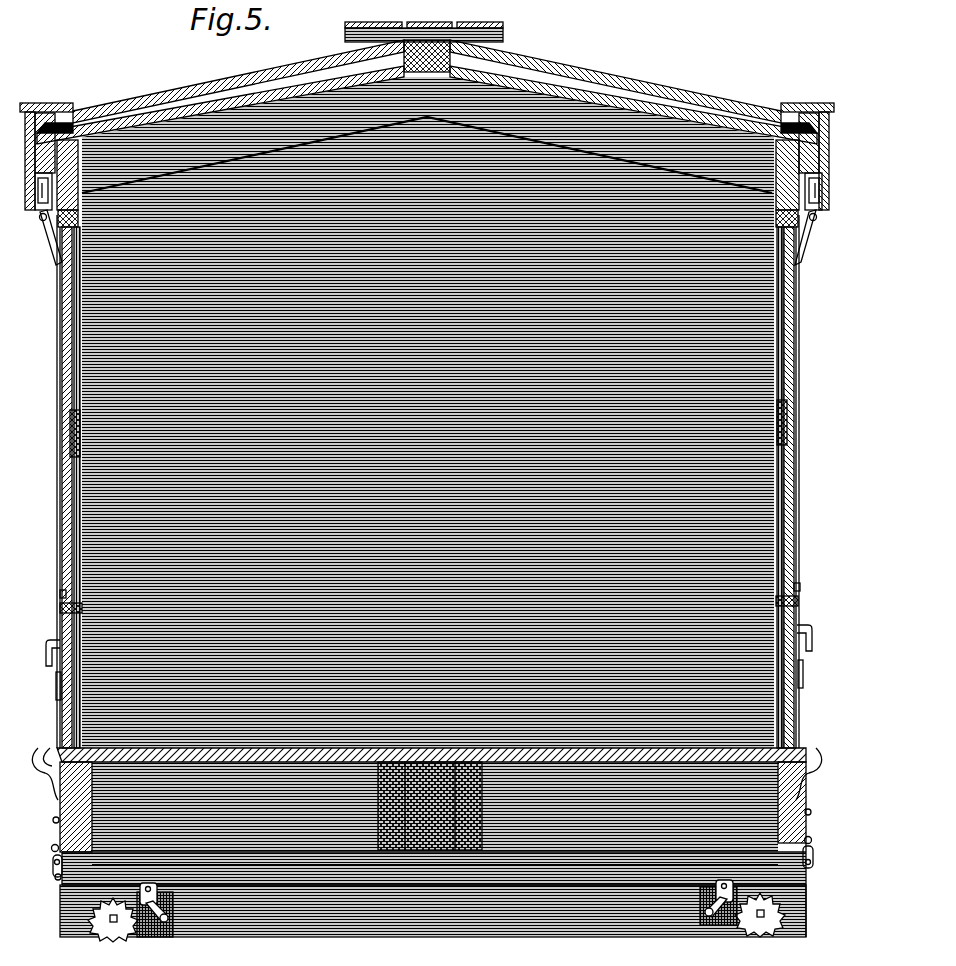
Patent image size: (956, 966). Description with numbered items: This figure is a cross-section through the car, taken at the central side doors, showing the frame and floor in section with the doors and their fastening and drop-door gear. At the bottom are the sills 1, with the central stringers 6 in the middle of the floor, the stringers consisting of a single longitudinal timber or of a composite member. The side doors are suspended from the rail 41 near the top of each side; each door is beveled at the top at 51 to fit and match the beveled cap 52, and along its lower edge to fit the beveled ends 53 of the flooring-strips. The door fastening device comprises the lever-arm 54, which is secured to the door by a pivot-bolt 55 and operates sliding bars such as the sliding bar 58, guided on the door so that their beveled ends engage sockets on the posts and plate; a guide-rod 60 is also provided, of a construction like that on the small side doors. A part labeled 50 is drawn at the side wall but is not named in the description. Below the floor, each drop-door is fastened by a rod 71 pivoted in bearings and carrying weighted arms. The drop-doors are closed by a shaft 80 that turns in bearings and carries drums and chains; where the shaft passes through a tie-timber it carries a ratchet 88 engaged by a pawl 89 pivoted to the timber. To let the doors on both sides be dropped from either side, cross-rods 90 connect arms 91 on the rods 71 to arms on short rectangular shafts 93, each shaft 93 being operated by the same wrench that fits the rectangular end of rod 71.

The sills 1 is at (62, 813).
The central stringers 6 is at (406, 768).
The rail 41 is at (35, 217).
The side wall door 50 is at (66, 330).
The beveled top of door 51 is at (56, 240).
The beveled cap 52 is at (822, 224).
The beveled ends of flooring-strips 53 is at (62, 746).
The lever-arm 54 is at (57, 688).
The pivot-bolt 55 is at (62, 608).
The sliding bar 58 is at (58, 357).
The guide-rod 60 is at (47, 658).
The rod 71 is at (52, 848).
The shaft 80 is at (112, 923).
The ratchet 88 is at (123, 937).
The pawl 89 is at (165, 925).
The cross-rod 90 is at (483, 863).
The arm 91 is at (55, 870).
The short rectangular shaft 93 is at (57, 880).